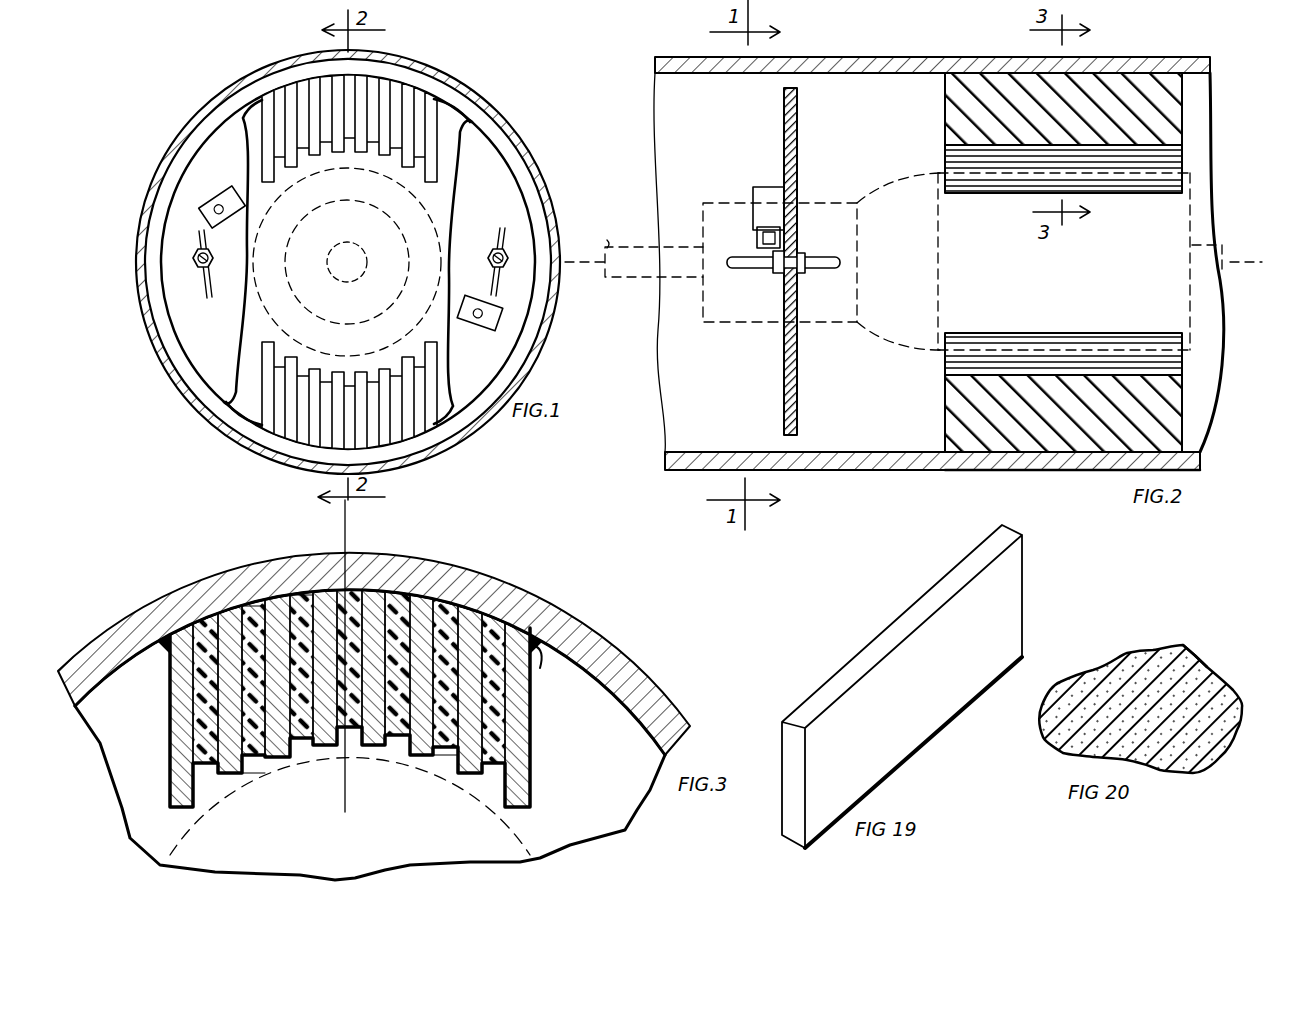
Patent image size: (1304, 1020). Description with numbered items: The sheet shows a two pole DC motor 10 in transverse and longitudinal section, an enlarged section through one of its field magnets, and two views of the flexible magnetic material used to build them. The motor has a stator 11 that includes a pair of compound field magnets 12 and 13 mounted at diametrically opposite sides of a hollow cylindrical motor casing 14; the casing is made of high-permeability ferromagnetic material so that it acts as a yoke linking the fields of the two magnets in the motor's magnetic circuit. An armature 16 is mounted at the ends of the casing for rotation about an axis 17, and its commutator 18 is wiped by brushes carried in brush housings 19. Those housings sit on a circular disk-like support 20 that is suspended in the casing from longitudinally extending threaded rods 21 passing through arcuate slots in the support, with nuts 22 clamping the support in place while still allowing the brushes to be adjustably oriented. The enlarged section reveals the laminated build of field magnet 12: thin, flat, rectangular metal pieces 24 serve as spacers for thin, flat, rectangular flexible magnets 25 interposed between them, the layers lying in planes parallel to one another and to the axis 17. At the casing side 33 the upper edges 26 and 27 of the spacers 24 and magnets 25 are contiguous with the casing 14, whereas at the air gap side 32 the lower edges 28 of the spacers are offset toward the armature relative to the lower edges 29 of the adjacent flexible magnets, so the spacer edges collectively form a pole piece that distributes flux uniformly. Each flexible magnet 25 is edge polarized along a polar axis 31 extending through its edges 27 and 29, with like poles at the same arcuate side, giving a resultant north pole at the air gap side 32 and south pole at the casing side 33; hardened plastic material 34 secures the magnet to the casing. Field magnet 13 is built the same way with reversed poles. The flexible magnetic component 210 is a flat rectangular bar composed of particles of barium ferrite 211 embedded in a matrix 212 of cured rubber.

In FIG. 1, the two pole DC motor 10 is at (247, 88).
In FIG. 2, the two pole DC motor 10 is at (1155, 62).
In FIG. 3, the two pole DC motor 10 is at (590, 640).
In FIG. 2, the stator 11 is at (960, 476).
In FIG. 1, the compound field magnet 12 is at (420, 75).
In FIG. 2, the compound field magnet 12 is at (1182, 108).
In FIG. 3, the compound field magnet 12 is at (530, 718).
In FIG. 1, the compound field magnet 13 is at (432, 378).
In FIG. 2, the compound field magnet 13 is at (1182, 410).
In FIG. 1, the motor casing 14 is at (528, 165).
In FIG. 2, the motor casing 14 is at (798, 470).
In FIG. 3, the motor casing 14 is at (510, 592).
In FIG. 1, the armature 16 is at (433, 228).
In FIG. 2, the armature 16 is at (1192, 213).
In FIG. 3, the armature 16 is at (505, 826).
In FIG. 2, the axis of armature rotation 17 is at (1263, 262).
In FIG. 2, the commutator 18 is at (805, 203).
In FIG. 1, the brush housing 19 is at (229, 188).
In FIG. 2, the brush housing 19 is at (752, 190).
In FIG. 1, the circular disk-like support 20 is at (172, 322).
In FIG. 2, the circular disk-like support 20 is at (784, 378).
In FIG. 1, the threaded rod 21 is at (198, 262).
In FIG. 2, the threaded rod 21 is at (806, 262).
In FIG. 2, the nut 22 is at (782, 275).
In FIG. 3, the metal piece 24 is at (186, 800).
In FIG. 2, the flexible magnet 25 is at (945, 113).
In FIG. 3, the flexible magnet 25 is at (302, 742).
In FIG. 3, the upper edge of spacer 26 is at (302, 592).
In FIG. 3, the upper edge of flexible magnet 27 is at (243, 606).
In FIG. 3, the lower edge of spacer 28 is at (423, 762).
In FIG. 3, the lower edge of flexible magnet 29 is at (497, 770).
In FIG. 3, the polar axis 31 is at (345, 800).
In FIG. 2, the air gap side 32 is at (945, 165).
In FIG. 3, the air gap side 32 is at (262, 762).
In FIG. 2, the casing side 33 is at (1080, 60).
In FIG. 3, the casing side 33 is at (450, 578).
In FIG. 3, the hardened plastic material 34 is at (168, 648).
In FIG. 19, the flexible magnetic component 210 is at (1022, 583).
In FIG. 20, the particles of barium ferrite 211 is at (1200, 670).
In FIG. 20, the matrix of cured rubber 212 is at (1236, 711).